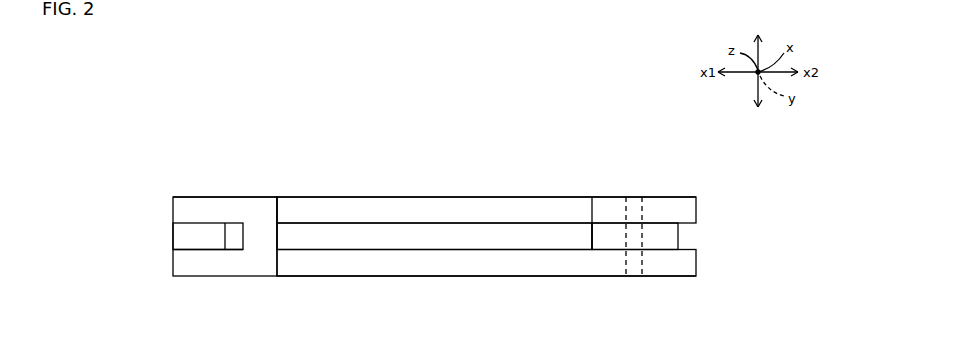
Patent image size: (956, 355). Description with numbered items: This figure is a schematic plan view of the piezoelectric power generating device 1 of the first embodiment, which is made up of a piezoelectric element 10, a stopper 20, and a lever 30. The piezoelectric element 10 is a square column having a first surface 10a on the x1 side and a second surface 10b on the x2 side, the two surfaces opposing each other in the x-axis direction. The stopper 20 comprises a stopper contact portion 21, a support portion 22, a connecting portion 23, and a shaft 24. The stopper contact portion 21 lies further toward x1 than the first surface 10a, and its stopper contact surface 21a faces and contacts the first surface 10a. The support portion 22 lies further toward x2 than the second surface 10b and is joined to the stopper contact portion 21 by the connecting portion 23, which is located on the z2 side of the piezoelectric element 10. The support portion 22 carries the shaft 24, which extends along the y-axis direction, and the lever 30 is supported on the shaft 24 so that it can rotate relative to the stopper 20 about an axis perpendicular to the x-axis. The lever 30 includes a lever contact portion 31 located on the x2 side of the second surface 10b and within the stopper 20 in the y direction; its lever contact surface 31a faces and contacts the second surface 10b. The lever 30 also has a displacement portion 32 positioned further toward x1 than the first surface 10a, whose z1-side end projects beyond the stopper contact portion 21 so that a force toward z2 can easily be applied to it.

The piezoelectric power generating device 1 is at (620, 118).
The piezoelectric element 10 is at (475, 223).
The first surface 10a is at (277, 240).
The second surface 10b is at (592, 232).
The stopper 20 is at (542, 277).
The stopper contact portion 21 is at (210, 197).
The stopper contact surface 21a is at (277, 213).
The support portion 22 is at (697, 207).
The connecting portion 23 is at (424, 277).
The shaft 24 is at (645, 262).
The lever 30 is at (173, 237).
The lever contact portion 31 is at (678, 238).
The lever contact surface 31a is at (592, 240).
The displacement portion 32 is at (202, 250).